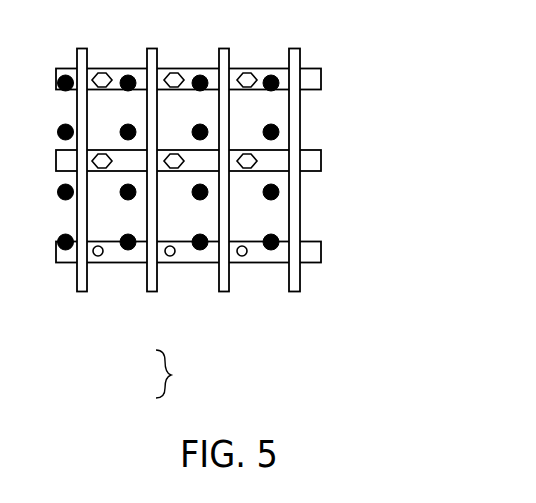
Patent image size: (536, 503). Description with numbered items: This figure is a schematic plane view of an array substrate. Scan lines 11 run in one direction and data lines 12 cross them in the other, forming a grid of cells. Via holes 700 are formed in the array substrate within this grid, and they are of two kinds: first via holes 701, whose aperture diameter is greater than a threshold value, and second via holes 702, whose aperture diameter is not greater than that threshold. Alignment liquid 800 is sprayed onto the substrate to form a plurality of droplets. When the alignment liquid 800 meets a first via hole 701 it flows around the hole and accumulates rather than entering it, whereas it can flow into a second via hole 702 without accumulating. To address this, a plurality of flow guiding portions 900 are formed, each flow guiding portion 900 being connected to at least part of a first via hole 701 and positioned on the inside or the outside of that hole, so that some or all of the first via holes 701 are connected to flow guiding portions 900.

The scan line 11 is at (311, 82).
The data line 12 is at (295, 118).
The via holes 700 is at (160, 372).
The first via hole 701 is at (246, 74).
The second via hole 702 is at (242, 257).
The alignment liquid 800 is at (128, 75).
The flow guiding portion 900 is at (264, 76).